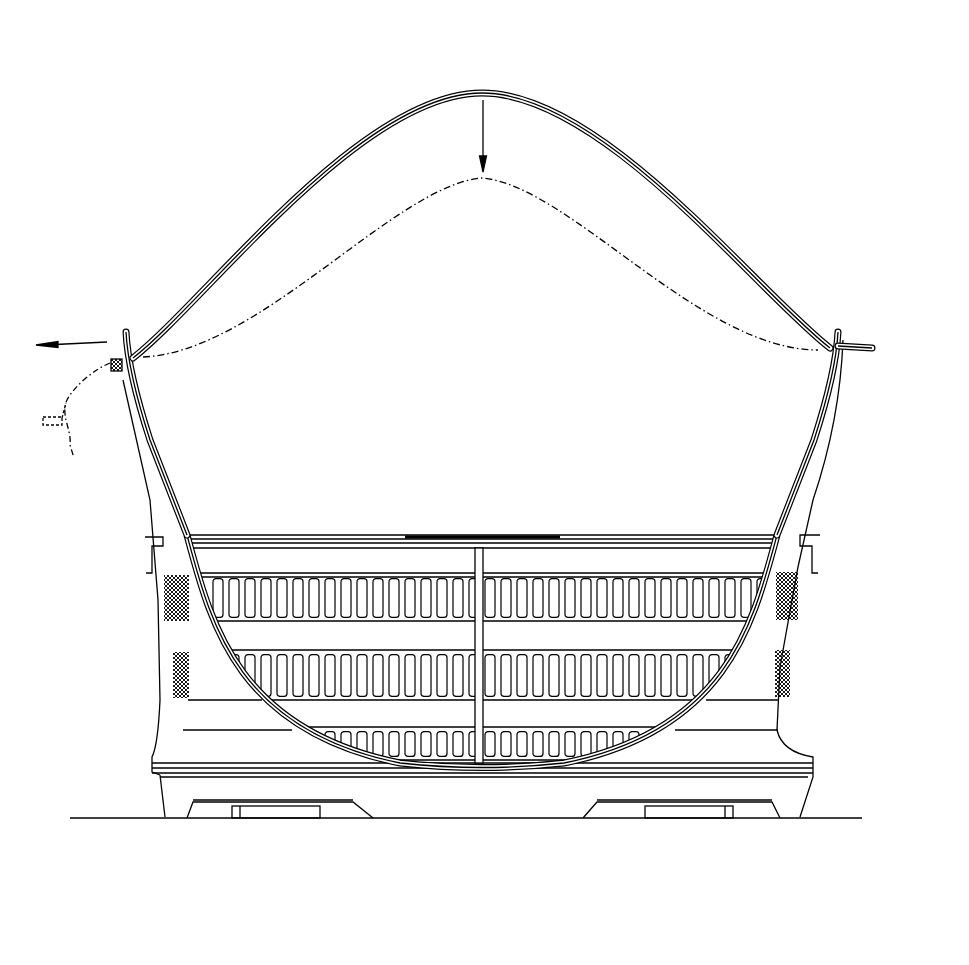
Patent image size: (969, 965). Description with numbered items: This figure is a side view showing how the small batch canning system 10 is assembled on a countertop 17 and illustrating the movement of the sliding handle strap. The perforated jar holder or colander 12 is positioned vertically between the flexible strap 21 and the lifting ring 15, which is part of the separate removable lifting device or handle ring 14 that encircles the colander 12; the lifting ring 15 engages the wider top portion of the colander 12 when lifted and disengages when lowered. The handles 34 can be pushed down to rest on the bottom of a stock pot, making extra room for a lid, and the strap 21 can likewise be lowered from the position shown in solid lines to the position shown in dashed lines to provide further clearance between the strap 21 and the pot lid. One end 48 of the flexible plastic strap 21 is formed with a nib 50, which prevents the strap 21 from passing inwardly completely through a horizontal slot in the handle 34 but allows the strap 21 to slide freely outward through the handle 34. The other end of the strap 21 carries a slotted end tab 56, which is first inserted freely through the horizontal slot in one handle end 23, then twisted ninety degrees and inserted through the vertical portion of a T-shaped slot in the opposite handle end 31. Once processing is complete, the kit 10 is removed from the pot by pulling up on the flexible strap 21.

The small batch canning system 10 is at (297, 79).
The colander 12 is at (337, 490).
The handle ring 14 is at (464, 580).
The lifting ring 15 is at (168, 792).
The countertop 17 is at (827, 814).
The flexible strap 21 is at (452, 302).
The handle end 23 is at (122, 384).
The opposite handle end 31 is at (824, 380).
The handle 34 is at (157, 497).
The strap end 48 is at (225, 267).
The nib 50 is at (110, 362).
The slotted end tab 56 is at (867, 342).